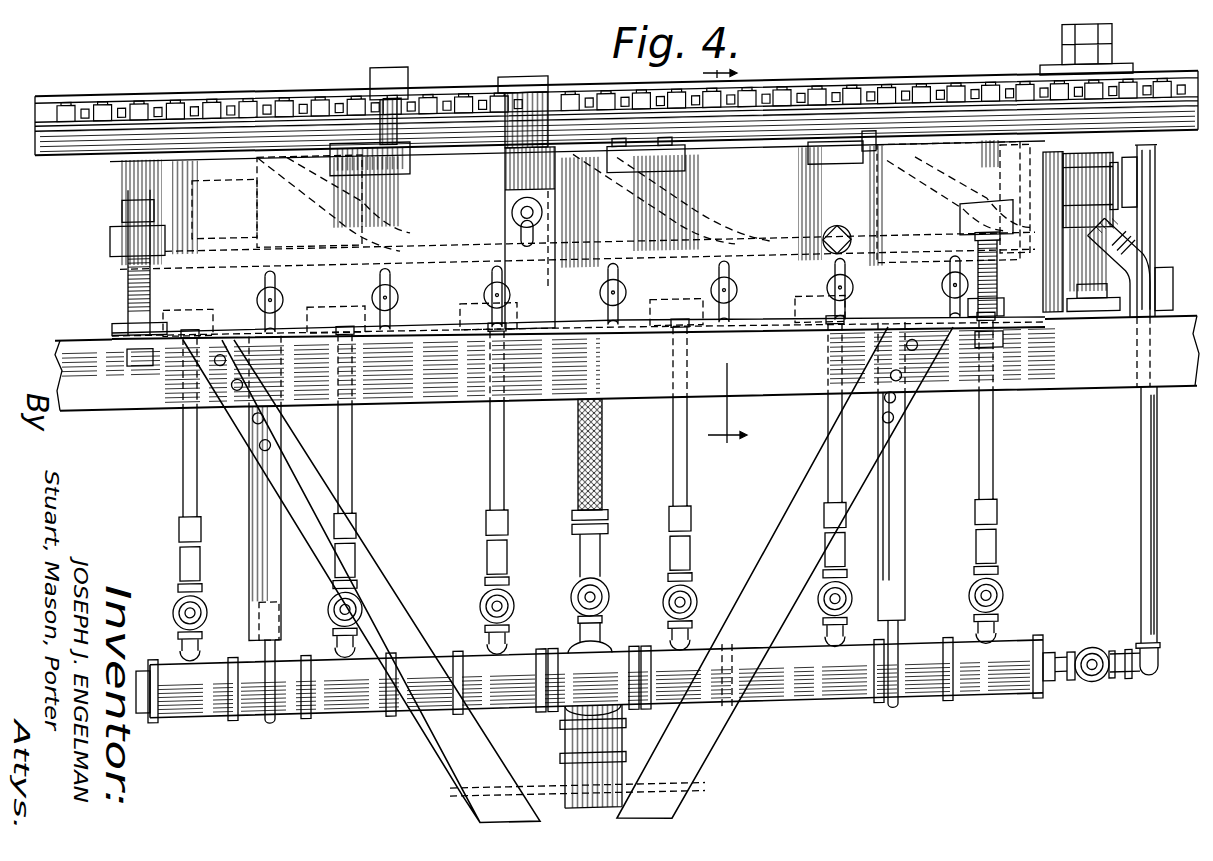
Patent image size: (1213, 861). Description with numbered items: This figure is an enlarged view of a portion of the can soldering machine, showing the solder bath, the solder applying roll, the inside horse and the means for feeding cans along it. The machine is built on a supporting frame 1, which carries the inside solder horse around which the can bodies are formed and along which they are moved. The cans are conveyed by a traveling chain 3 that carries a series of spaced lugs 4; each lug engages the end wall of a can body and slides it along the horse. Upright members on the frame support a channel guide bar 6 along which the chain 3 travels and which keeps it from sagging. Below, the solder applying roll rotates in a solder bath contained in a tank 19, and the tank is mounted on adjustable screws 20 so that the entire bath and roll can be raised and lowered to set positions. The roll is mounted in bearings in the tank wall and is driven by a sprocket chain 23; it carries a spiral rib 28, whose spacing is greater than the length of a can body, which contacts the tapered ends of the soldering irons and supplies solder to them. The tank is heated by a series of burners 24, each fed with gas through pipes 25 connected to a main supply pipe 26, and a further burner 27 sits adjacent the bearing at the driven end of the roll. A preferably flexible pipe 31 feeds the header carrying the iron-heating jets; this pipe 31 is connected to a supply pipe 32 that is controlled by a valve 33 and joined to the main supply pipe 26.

The supporting frame 1 is at (627, 363).
The traveling chain 3 is at (958, 90).
The lugs 4 is at (259, 102).
The channel guide bar 6 is at (725, 258).
The tank 19 is at (577, 239).
The adjustable screws 20 is at (118, 284).
The sprocket chain 23 is at (1153, 180).
The burners 24 is at (130, 323).
The pipes 25 is at (184, 452).
The main supply pipe 26 is at (358, 700).
The burner 27 is at (1125, 242).
The spiral rib 28 is at (298, 160).
The pipe 31 is at (603, 428).
The supply pipe 32 is at (601, 546).
The valve 33 is at (601, 598).